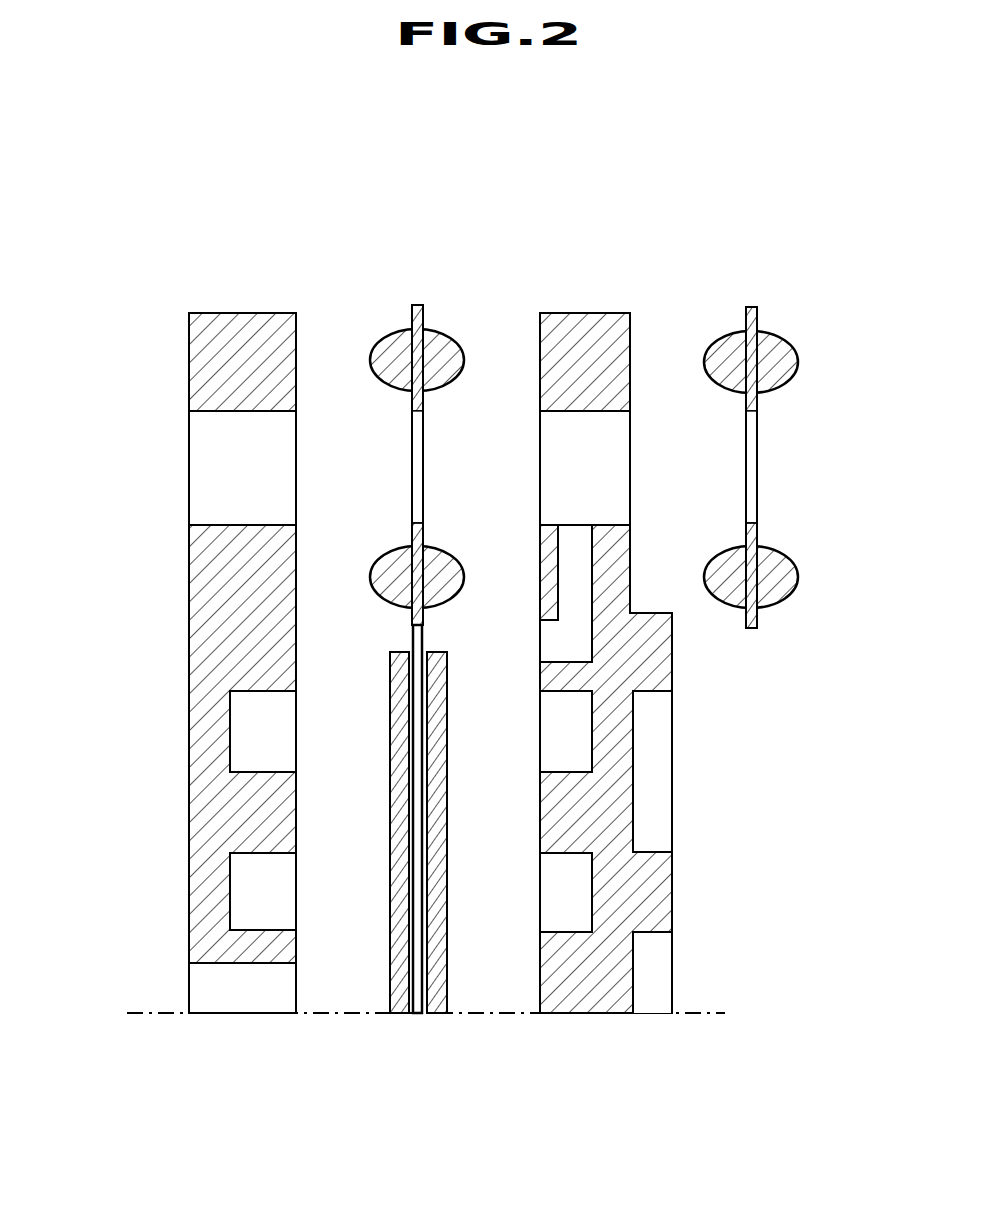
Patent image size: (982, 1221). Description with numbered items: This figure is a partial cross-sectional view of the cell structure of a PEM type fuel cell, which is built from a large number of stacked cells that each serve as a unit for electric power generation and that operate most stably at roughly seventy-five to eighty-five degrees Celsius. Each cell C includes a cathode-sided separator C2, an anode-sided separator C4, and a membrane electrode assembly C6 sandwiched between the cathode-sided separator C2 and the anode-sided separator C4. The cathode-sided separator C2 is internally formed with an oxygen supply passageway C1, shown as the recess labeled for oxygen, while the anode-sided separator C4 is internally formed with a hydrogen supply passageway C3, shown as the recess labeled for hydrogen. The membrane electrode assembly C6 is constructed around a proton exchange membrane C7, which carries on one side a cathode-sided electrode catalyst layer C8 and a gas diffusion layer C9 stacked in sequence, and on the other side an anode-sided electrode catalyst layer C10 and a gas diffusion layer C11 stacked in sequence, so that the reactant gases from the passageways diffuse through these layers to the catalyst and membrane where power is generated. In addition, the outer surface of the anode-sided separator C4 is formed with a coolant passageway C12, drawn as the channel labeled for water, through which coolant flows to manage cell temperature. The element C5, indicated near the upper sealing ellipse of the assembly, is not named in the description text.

The cell C is at (785, 287).
The oxygen supply passageway C1 is at (288, 863).
The cathode-sided separator C2 is at (190, 577).
The hydrogen supply passageway C3 is at (553, 863).
The anode-sided separator C4 is at (672, 660).
The seal member C5 is at (458, 386).
The membrane electrode assembly C6 is at (473, 1022).
The proton exchange membrane C7 is at (426, 630).
The cathode-sided electrode catalyst layer C8 is at (393, 652).
The gas diffusion layer C9 is at (396, 745).
The anode-sided electrode catalyst layer C10 is at (443, 651).
The gas diffusion layer C11 is at (443, 745).
The coolant passageway C12 is at (662, 832).